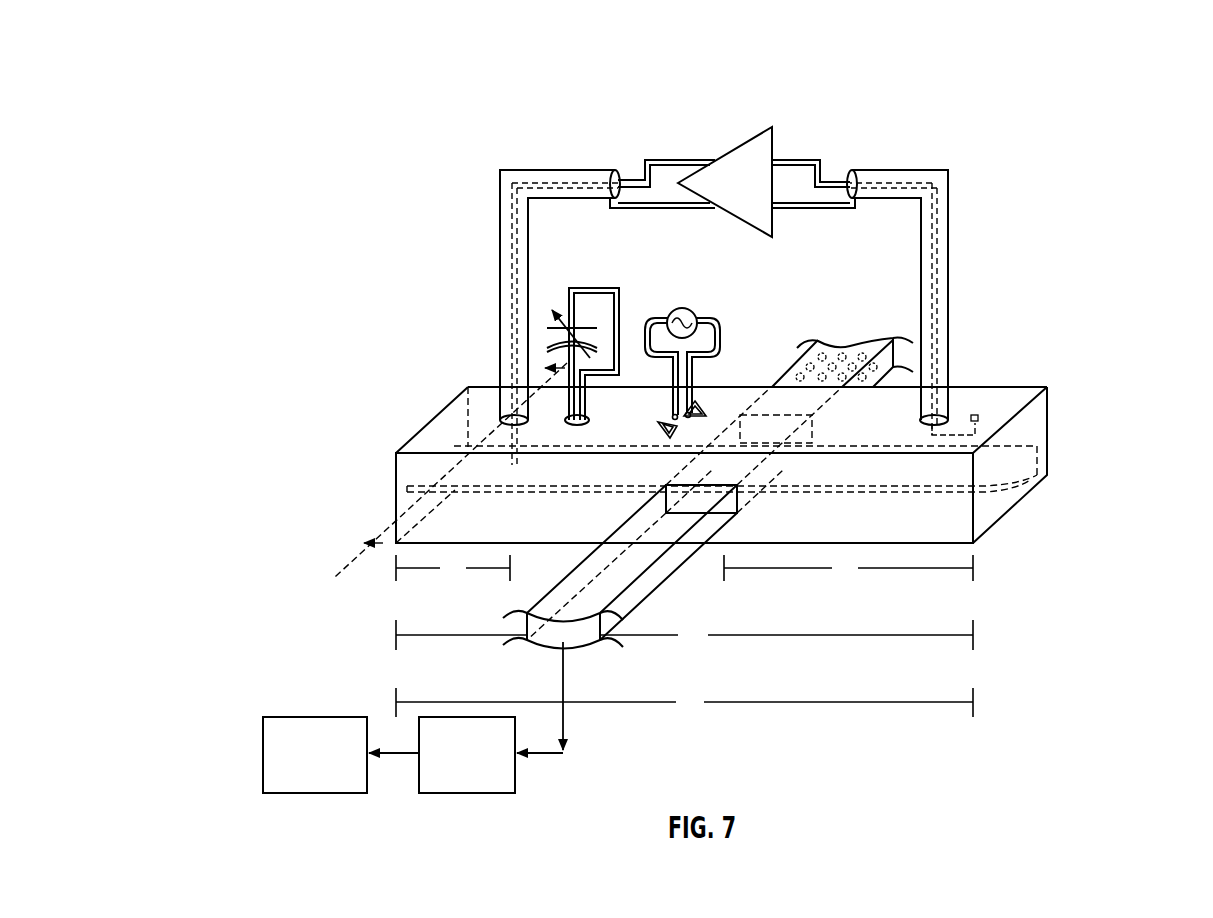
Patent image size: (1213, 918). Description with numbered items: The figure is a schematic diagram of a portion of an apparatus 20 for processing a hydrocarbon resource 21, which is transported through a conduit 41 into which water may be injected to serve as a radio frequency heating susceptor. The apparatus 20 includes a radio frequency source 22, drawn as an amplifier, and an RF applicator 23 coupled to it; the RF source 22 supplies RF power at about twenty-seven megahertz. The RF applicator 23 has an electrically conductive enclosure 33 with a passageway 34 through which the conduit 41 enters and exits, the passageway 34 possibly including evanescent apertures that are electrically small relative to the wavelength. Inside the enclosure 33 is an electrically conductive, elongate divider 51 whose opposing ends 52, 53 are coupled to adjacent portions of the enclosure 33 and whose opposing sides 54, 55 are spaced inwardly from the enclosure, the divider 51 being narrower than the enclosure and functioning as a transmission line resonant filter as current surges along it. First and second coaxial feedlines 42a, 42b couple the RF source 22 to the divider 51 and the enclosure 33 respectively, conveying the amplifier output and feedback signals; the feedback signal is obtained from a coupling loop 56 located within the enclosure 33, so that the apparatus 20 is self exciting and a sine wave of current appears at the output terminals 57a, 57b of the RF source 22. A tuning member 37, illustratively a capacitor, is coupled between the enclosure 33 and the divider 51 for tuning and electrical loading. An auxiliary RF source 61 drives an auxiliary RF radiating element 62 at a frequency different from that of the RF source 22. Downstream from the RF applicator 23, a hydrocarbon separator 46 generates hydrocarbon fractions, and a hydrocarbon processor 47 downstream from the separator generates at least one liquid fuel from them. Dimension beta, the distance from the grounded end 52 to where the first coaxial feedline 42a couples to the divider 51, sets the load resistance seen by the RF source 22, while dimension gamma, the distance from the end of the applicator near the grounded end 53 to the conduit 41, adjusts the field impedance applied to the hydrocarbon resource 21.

The apparatus 20 is at (598, 78).
The hydrocarbon resource 21 is at (790, 455).
The radio frequency (RF) source 22 is at (752, 127).
The RF applicator 23 is at (403, 393).
The enclosure 33 is at (1047, 387).
The passageway 34 is at (763, 415).
The tuning member 37 is at (597, 288).
The conduit 41 is at (602, 614).
The first coaxial feedline 42a is at (485, 178).
The second coaxial feedline 42b is at (975, 222).
The hydrocarbon separator 46 is at (515, 765).
The hydrocarbon processor 47 is at (263, 755).
The divider 51 is at (997, 500).
The end of divider 52 is at (436, 468).
The end of divider 53 is at (1013, 478).
The side of divider 54 is at (1000, 470).
The side of divider 55 is at (897, 488).
The coupling loop 56 is at (947, 428).
The output terminal 57a is at (714, 160).
The output terminal 57b is at (704, 207).
The auxiliary RF source 61 is at (680, 308).
The auxiliary RF radiating element 62 is at (706, 410).